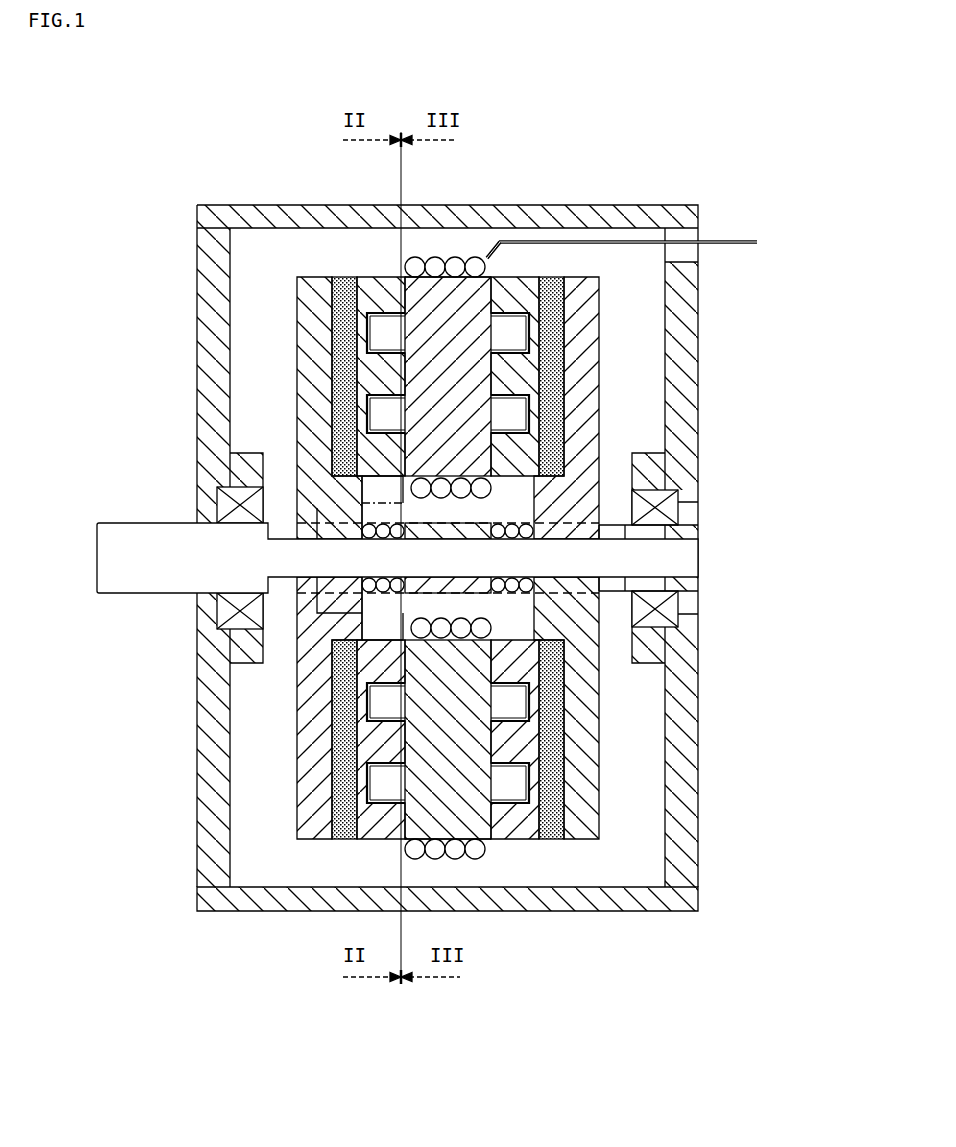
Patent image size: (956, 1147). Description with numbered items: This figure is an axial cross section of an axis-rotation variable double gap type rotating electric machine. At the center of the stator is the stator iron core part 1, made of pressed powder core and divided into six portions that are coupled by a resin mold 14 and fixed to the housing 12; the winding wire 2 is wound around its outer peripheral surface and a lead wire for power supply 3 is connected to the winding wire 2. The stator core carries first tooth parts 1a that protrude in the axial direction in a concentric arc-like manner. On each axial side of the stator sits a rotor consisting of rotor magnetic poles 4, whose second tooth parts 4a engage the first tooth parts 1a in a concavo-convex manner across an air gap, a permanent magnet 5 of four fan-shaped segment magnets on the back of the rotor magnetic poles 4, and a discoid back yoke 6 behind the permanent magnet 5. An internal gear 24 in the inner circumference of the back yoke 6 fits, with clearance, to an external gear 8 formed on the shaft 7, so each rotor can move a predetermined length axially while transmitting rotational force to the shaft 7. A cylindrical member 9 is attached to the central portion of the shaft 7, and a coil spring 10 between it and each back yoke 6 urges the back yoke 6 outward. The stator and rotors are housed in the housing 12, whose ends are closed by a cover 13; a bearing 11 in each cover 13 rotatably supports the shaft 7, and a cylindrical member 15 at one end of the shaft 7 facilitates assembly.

The stator iron core part 1 is at (412, 310).
The first tooth parts 1a is at (512, 342).
The winding wire 2 is at (452, 258).
The lead wire for power supply 3 is at (480, 252).
The rotor magnetic poles 4 is at (372, 282).
The second tooth parts 4a is at (690, 241).
The permanent magnet 5 is at (300, 278).
The back yoke 6 is at (300, 333).
The shaft 7 is at (162, 535).
The external gear 8 is at (612, 522).
The cylindrical member 9 is at (430, 588).
The coil spring 10 is at (508, 522).
The bearing 11 is at (665, 482).
The housing 12 is at (692, 903).
The cover 13 is at (692, 706).
The resin mold 14 is at (435, 243).
The cylindrical member 15 is at (687, 535).
The internal gear 24 is at (585, 578).